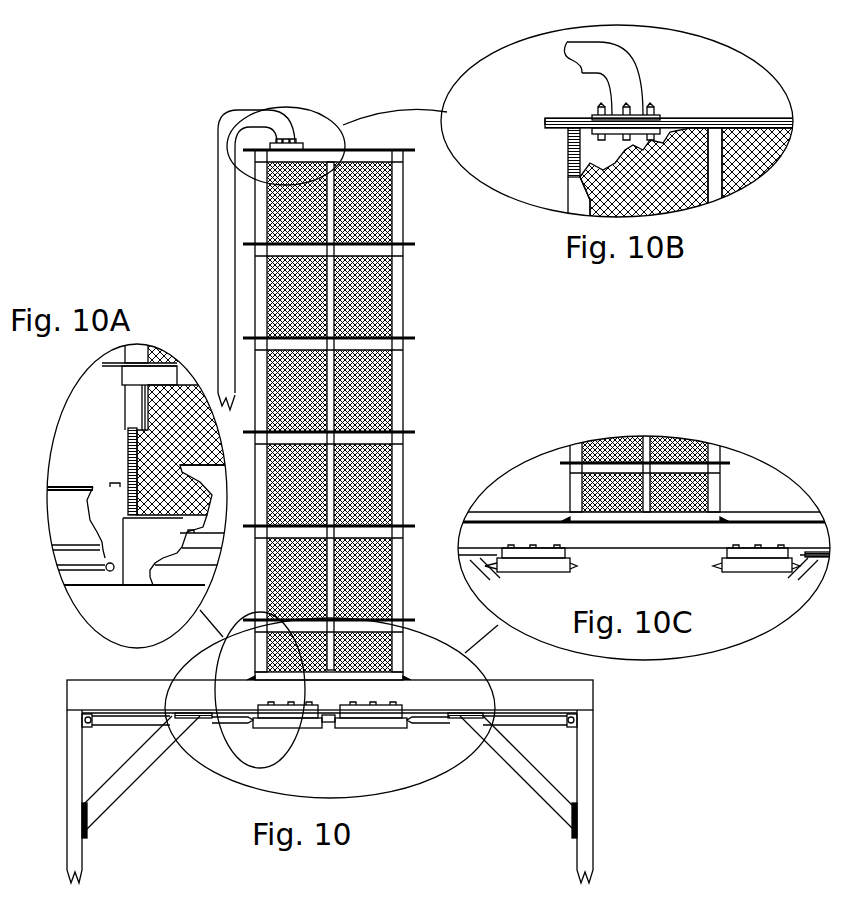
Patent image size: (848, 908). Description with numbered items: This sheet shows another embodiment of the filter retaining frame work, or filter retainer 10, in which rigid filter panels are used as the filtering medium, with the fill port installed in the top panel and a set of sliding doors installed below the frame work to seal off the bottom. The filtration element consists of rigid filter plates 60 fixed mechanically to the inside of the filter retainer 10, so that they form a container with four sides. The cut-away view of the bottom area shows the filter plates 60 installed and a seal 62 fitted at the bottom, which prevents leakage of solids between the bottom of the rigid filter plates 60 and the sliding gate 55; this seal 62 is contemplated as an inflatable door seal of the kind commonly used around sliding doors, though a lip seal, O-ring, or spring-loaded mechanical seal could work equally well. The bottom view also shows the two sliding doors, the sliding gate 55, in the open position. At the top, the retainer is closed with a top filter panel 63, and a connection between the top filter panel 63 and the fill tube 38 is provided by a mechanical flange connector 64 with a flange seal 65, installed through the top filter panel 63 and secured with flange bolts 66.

In FIG. 10, the filter retainer 10 is at (380, 133).
In FIG. 10B, the fill tube 38 is at (620, 66).
In FIG. 10, the sliding gate 55 is at (330, 715).
In FIG. 10A, the sliding gate 55 is at (185, 575).
In FIG. 10C, the sliding gate 55 is at (560, 568).
In FIG. 10A, the rigid filter plates 60 is at (130, 470).
In FIG. 10A, the seal 62 is at (150, 538).
In FIG. 10B, the top filter panel 63 is at (672, 121).
In FIG. 10B, the mechanical flange connector 64 is at (638, 108).
In FIG. 10B, the flange seal 65 is at (590, 118).
In FIG. 10B, the flange bolts 66 is at (598, 136).